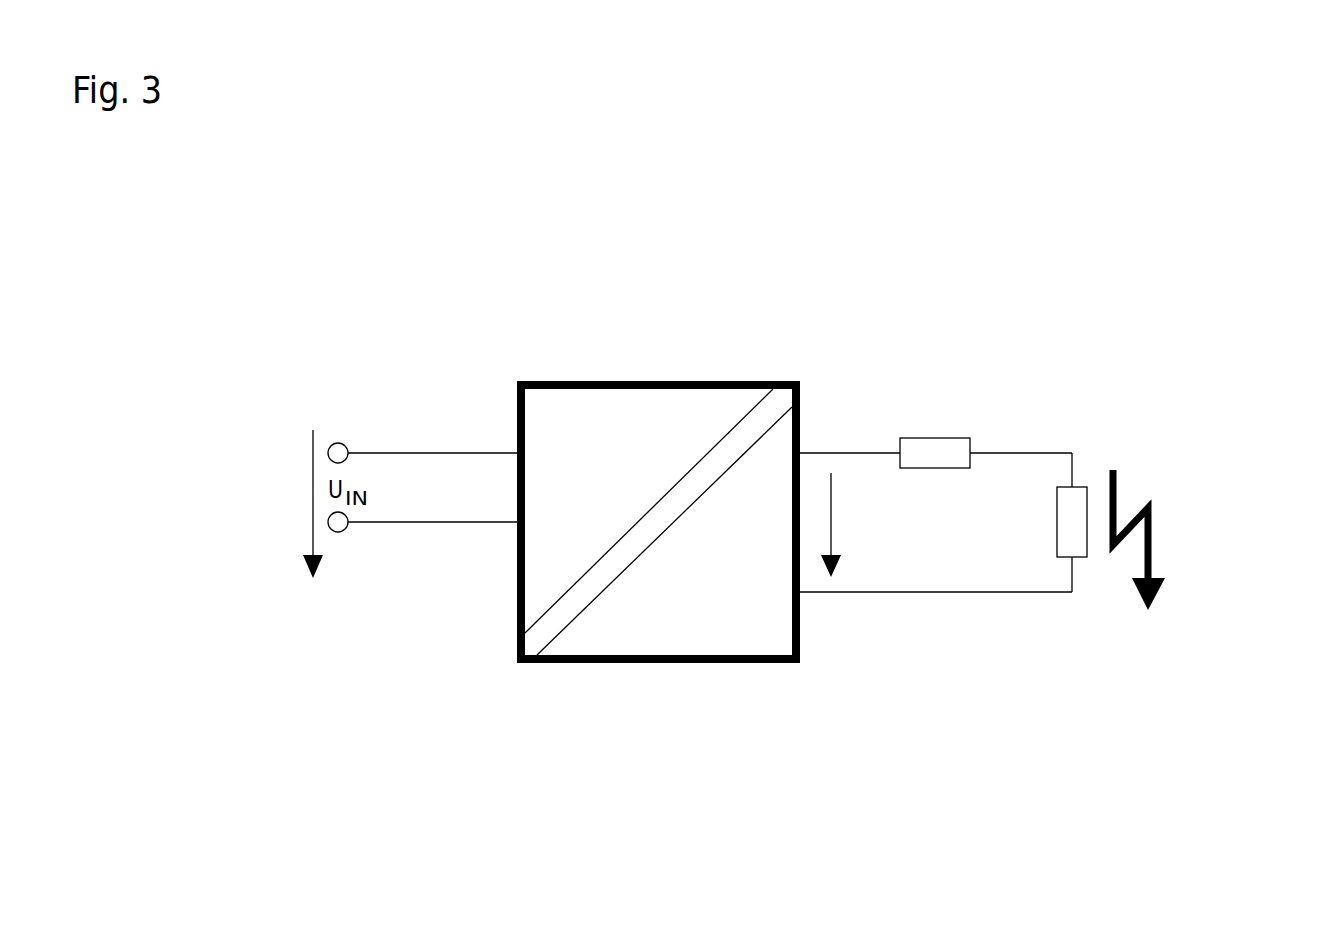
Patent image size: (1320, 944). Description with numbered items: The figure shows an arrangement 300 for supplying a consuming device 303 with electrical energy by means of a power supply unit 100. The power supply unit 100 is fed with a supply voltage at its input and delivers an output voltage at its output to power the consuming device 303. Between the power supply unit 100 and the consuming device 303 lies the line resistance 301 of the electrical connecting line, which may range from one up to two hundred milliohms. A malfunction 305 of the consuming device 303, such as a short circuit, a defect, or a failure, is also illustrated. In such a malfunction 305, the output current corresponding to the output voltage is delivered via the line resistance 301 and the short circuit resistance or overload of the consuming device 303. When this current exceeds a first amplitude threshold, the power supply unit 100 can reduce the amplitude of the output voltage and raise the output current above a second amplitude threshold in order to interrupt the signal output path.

The power supply unit 100 is at (610, 433).
The arrangement 300 is at (936, 716).
The line resistance 301 is at (933, 447).
The consuming device 303 is at (1073, 503).
The malfunction 305 is at (1152, 525).